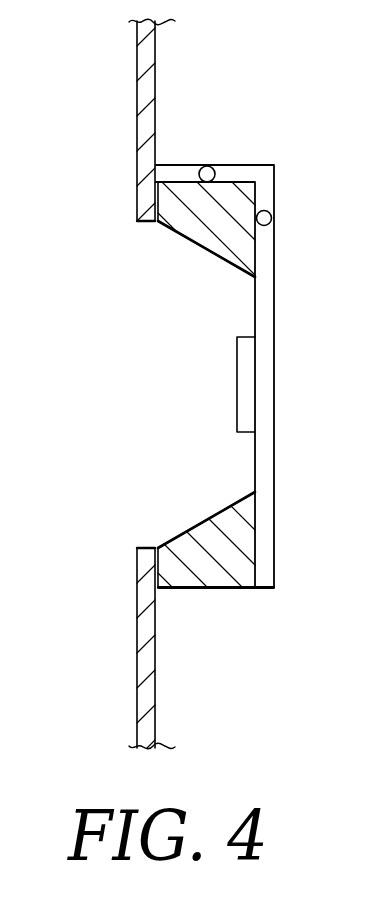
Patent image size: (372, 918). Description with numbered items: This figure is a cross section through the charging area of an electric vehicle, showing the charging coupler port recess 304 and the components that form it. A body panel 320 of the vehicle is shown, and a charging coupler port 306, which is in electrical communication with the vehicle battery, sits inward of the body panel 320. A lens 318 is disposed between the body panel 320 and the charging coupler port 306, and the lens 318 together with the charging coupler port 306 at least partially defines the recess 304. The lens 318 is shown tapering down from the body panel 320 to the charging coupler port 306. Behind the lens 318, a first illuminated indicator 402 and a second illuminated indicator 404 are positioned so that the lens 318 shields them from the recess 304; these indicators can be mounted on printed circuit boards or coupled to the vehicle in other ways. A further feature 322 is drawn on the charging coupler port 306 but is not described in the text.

The charging coupler port recess 304 is at (170, 463).
The charging coupler port 306 is at (274, 374).
The lens 318 is at (205, 250).
The body panel 320 is at (156, 44).
The tab 322 is at (237, 382).
The first illuminated indicator 402 is at (207, 166).
The second illuminated indicator 404 is at (274, 217).